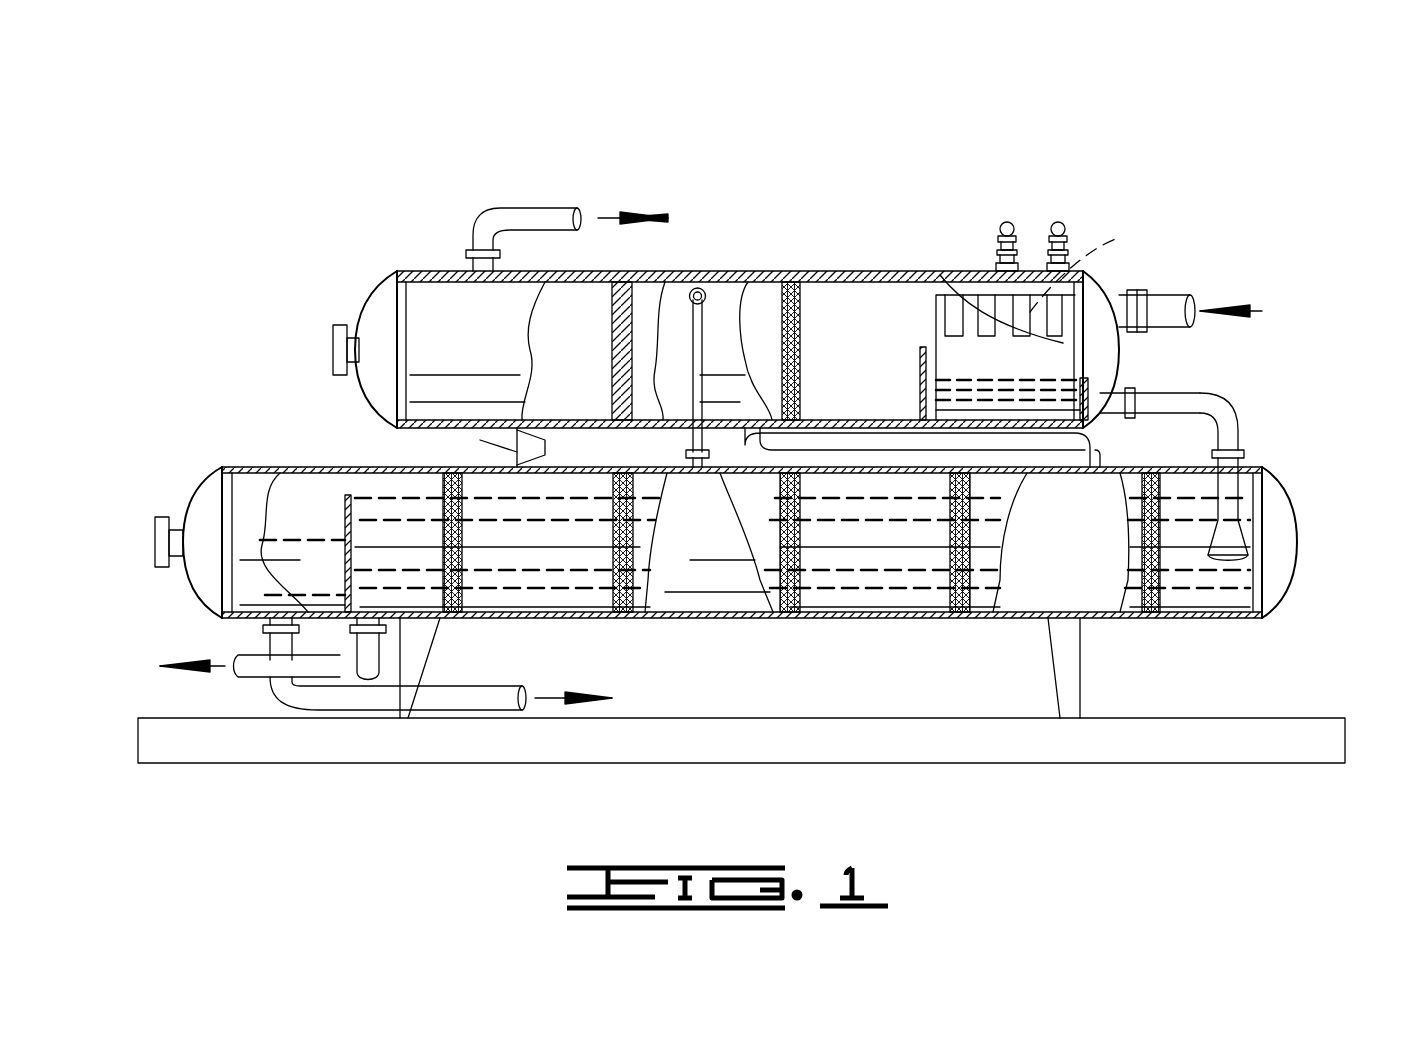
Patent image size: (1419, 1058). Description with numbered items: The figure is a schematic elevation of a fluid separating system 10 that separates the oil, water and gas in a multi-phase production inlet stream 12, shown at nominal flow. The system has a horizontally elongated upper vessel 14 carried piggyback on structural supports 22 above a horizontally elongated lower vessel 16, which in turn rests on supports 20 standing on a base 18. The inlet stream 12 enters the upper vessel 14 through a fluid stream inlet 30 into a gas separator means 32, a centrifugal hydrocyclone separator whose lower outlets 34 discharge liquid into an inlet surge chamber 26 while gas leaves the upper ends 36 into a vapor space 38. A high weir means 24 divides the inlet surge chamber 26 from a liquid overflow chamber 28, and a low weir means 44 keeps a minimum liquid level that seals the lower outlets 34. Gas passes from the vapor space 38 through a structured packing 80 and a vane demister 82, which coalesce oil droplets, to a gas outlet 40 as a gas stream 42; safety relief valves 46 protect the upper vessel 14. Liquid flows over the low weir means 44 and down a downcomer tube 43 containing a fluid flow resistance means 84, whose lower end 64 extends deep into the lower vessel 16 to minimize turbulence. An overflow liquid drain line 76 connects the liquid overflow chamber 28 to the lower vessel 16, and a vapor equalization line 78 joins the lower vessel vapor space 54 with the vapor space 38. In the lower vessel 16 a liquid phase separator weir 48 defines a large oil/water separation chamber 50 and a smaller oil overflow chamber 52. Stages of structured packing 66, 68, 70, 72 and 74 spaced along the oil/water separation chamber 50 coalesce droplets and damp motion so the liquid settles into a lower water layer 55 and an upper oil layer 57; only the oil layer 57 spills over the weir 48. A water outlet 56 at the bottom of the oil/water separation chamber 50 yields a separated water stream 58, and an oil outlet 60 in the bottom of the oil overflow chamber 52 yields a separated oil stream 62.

The separating system 10 is at (1118, 200).
The inlet stream 12 is at (1252, 307).
The upper vessel 14 is at (412, 270).
The lower vessel 16 is at (243, 465).
The base 18 is at (1265, 732).
The supports 20 is at (430, 652).
The structural supports 22 is at (515, 440).
The high weir means 24 is at (920, 360).
The inlet surge chamber 26 is at (1035, 368).
The liquid overflow chamber 28 is at (586, 392).
The fluid stream inlet 30 is at (1140, 290).
The gas separator means 32 is at (943, 277).
The lower outlet 34 is at (1062, 425).
The upper ends 36 is at (1120, 240).
The vapor space 38 is at (856, 295).
The gas outlet 40 is at (473, 240).
The gas stream 42 is at (598, 214).
The downcomer tube 43 is at (1215, 408).
The low weir means 44 is at (1088, 385).
The safety relief valves 46 is at (1057, 222).
The liquid phase separator weir 48 is at (346, 495).
The oil/water separation chamber 50 is at (662, 544).
The oil overflow chamber 52 is at (308, 519).
The lower vessel vapor space 54 is at (432, 490).
The lower water layer 55 is at (858, 600).
The water outlet 56 is at (370, 655).
The upper oil layer 57 is at (856, 544).
The separated water stream 58 is at (218, 660).
The oil outlet 60 is at (272, 680).
The separated oil stream 62 is at (556, 695).
The lower end 64 is at (1235, 562).
The structured packing 66 is at (1150, 617).
The structured packing 68 is at (955, 617).
The structured packing 70 is at (790, 617).
The structured packing 72 is at (622, 617).
The structured packing 74 is at (452, 617).
The overflow liquid drain line 76 is at (893, 450).
The vapor equalization line 78 is at (702, 312).
The structured packing 80 is at (790, 305).
The vane demister 82 is at (625, 292).
The fluid flow resistance means 84 is at (1136, 398).